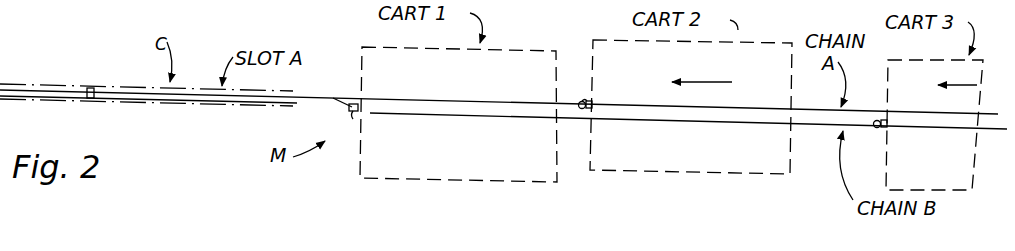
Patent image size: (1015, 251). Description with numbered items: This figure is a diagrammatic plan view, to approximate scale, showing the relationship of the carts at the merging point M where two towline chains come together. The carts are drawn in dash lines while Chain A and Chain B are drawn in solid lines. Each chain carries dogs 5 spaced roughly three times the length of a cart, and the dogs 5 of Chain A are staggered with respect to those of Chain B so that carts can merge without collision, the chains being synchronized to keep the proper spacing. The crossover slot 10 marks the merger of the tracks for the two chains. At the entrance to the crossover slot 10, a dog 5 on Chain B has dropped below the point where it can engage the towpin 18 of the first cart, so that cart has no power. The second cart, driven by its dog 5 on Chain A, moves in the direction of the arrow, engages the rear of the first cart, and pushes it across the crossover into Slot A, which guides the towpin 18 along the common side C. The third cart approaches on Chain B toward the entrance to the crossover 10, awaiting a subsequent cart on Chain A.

The dog 5 is at (92, 87).
The crossover slot 10 is at (343, 103).
The towpin 18 is at (354, 114).